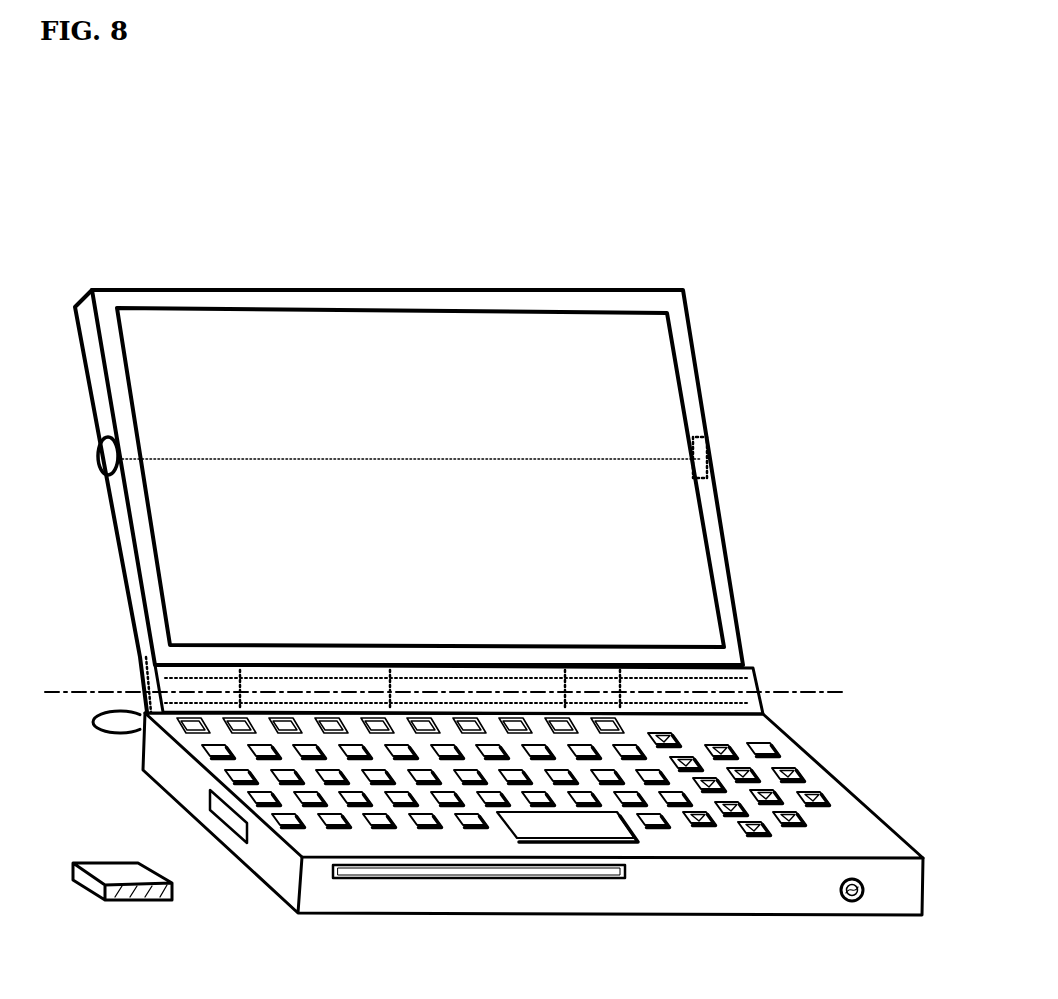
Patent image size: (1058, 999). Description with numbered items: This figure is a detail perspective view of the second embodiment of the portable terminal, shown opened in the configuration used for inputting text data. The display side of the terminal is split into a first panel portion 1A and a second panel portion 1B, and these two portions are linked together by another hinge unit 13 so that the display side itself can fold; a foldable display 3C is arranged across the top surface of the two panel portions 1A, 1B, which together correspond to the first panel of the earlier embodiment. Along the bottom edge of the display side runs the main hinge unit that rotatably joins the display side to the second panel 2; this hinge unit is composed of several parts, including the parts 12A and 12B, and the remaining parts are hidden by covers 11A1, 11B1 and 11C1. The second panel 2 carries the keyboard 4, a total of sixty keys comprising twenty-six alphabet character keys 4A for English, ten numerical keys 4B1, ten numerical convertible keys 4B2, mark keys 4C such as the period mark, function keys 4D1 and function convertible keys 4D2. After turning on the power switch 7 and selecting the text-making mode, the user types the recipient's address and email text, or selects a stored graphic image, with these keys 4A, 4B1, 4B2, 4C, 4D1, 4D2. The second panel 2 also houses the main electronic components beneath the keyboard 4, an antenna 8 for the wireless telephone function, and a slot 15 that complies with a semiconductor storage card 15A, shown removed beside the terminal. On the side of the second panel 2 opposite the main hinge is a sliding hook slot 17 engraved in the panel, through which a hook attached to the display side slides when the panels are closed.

The first panel portion 1A is at (730, 615).
The second panel portion 1B is at (700, 392).
The second panel 2 is at (763, 882).
The foldable display 3C is at (695, 537).
The keyboard 4 is at (335, 830).
The character keys 4A is at (262, 770).
The numerical keys 4B1 is at (185, 727).
The numerical convertible keys 4B2 is at (790, 826).
The mark keys 4C is at (692, 830).
The function keys 4D1 is at (540, 840).
The function convertible keys 4D2 is at (808, 798).
The power switch 7 is at (853, 901).
The antenna 8 is at (117, 720).
The cover 11A1 is at (440, 690).
The cover 11B1 is at (195, 690).
The cover 11C1 is at (655, 690).
The hinge unit part 12A is at (290, 690).
The hinge unit part 12B is at (572, 692).
The hinge unit 13 is at (110, 452).
The slot 15 is at (232, 824).
The semiconductor storage card 15A is at (105, 885).
The sliding hook slot 17 is at (410, 866).